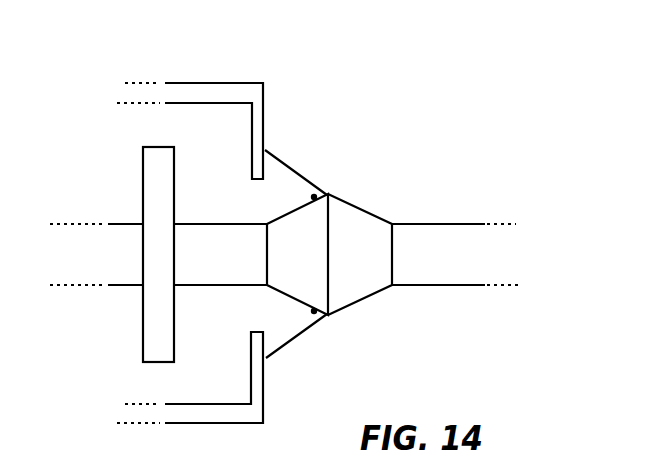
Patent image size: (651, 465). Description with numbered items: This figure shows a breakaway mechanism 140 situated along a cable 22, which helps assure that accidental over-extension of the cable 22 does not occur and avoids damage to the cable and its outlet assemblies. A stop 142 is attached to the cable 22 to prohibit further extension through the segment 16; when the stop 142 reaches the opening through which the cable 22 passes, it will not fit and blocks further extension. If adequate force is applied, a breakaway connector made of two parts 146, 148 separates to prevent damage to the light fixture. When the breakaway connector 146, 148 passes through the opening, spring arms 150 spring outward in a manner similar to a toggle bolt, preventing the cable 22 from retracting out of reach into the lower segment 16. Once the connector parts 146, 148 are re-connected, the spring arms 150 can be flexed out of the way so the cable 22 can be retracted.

The breakaway mechanism 140 is at (474, 121).
The segment 16 is at (205, 83).
The cable 22 is at (426, 237).
The stop 142 is at (157, 362).
The breakaway connector part 146 is at (322, 228).
The breakaway connector part 148 is at (350, 290).
The spring arms 150 is at (278, 155).